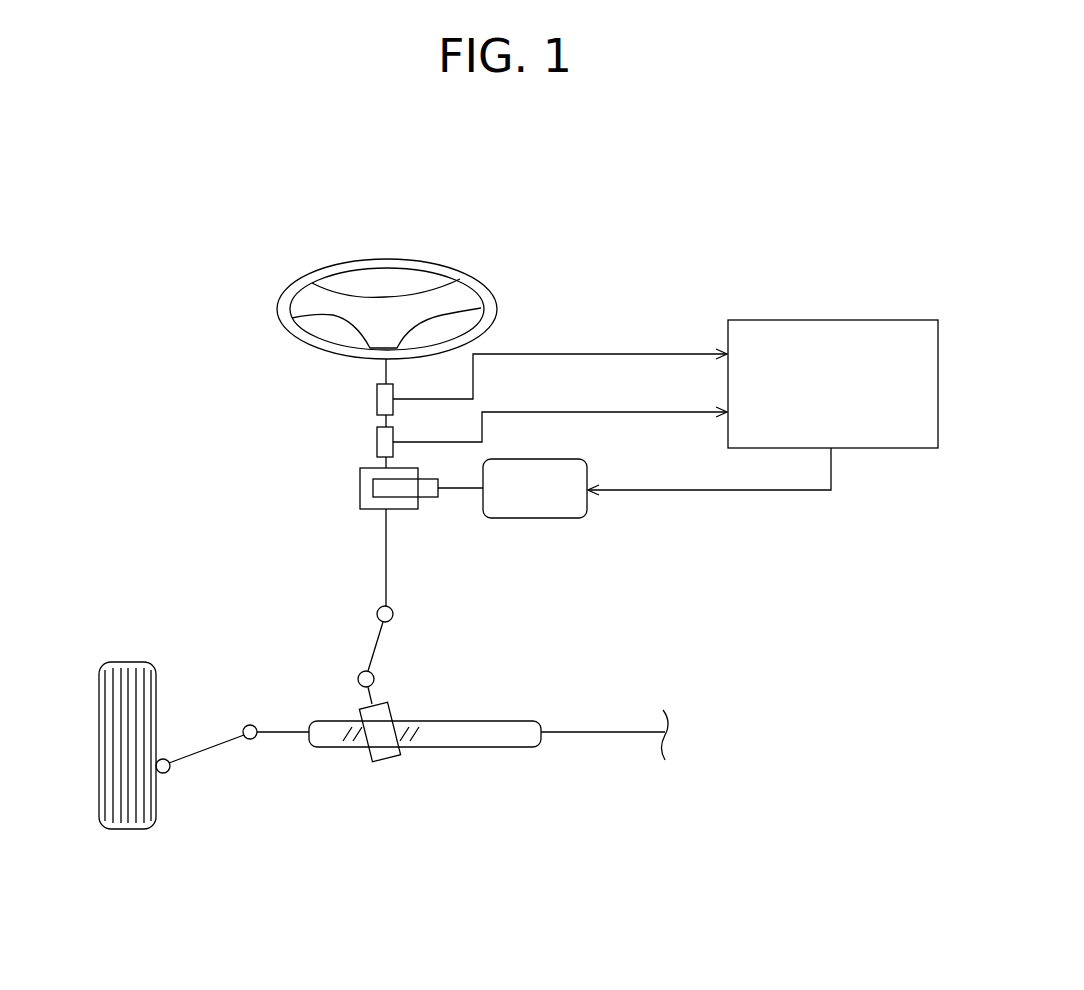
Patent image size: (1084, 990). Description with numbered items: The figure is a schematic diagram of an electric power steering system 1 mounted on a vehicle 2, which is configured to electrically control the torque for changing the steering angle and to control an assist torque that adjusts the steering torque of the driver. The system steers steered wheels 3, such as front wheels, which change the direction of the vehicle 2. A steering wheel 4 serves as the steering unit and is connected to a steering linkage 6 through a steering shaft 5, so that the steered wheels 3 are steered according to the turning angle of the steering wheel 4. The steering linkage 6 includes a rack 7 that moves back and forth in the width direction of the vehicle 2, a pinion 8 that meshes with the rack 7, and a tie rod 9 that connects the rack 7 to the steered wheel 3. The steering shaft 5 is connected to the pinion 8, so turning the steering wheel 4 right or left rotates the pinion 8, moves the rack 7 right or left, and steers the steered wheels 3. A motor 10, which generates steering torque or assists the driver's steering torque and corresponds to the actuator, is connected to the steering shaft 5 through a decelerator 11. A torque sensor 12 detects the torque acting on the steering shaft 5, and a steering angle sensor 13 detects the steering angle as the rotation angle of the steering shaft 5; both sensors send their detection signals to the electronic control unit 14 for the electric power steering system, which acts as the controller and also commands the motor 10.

The electric power steering system 1 is at (197, 371).
The vehicle 2 is at (519, 804).
The steered wheels 3 is at (96, 743).
The steering wheel 4 is at (391, 258).
The steering shaft 5 is at (384, 579).
The steering linkage 6 is at (608, 731).
The rack 7 is at (333, 718).
The pinion 8 is at (393, 766).
The tie rod 9 is at (275, 734).
The motor 10 is at (537, 520).
The decelerator 11 is at (411, 511).
The torque sensor 12 is at (376, 400).
The steering angle sensor 13 is at (376, 442).
The electronic control unit (EPS-ECU) 14 is at (838, 318).